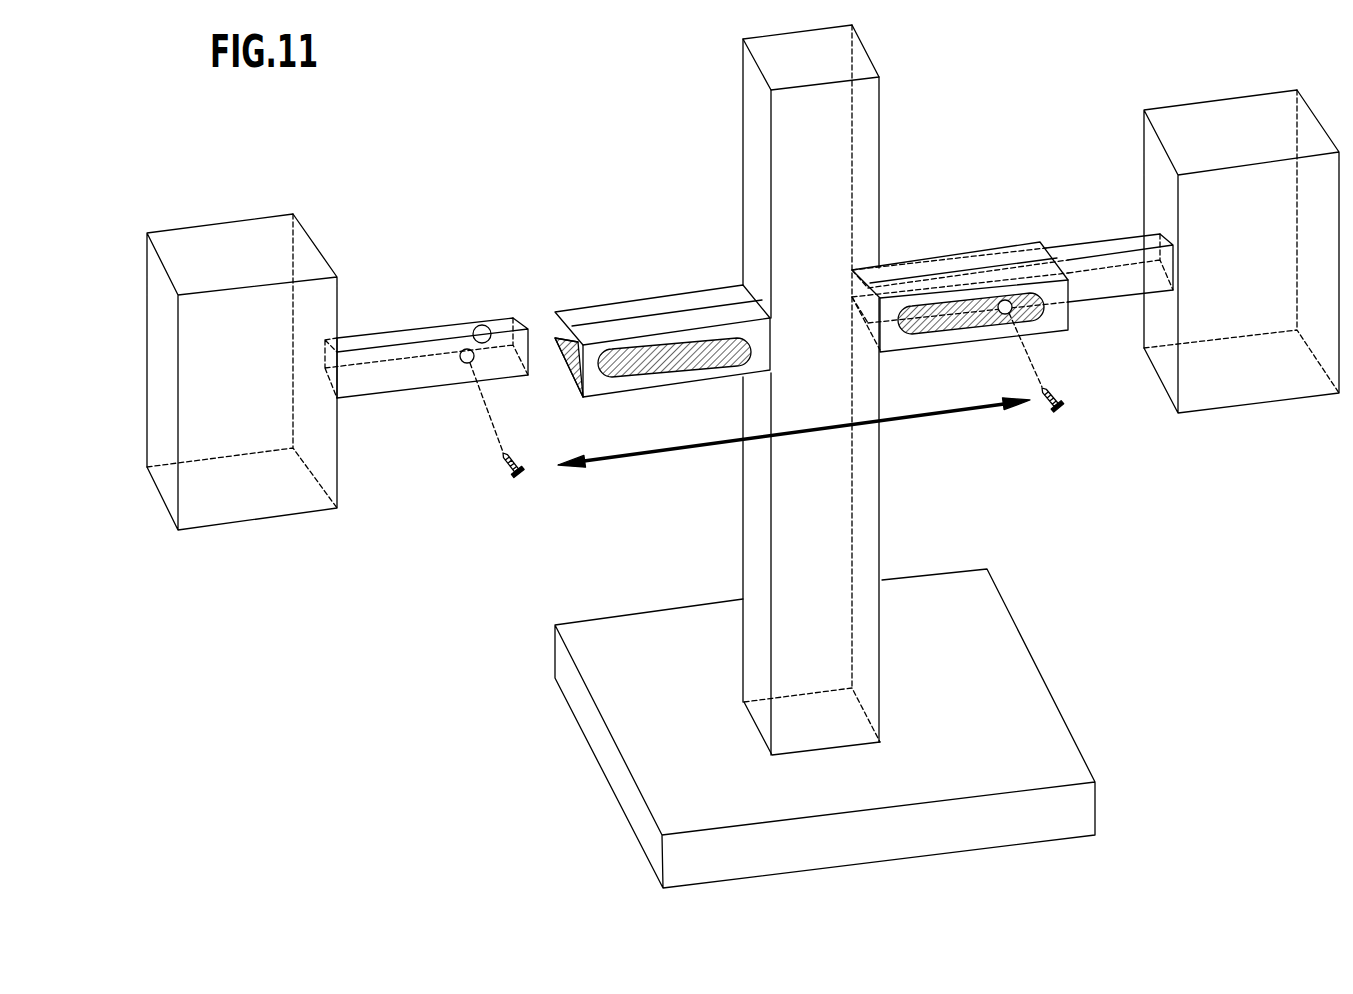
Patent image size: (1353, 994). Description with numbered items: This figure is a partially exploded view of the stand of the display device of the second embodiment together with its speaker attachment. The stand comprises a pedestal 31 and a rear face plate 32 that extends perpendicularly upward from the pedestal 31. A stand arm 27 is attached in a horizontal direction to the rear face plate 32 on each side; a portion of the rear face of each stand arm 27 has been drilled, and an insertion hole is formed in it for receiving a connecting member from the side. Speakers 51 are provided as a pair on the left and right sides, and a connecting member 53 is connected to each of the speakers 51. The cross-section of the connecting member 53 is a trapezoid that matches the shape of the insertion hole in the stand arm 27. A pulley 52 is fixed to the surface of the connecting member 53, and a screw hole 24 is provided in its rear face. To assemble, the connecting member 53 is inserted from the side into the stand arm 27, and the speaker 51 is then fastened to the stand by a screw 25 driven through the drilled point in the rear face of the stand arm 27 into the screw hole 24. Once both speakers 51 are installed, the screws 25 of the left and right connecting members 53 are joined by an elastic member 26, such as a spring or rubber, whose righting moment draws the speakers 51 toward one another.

The screw hole 24 is at (734, 382).
The screw 25 is at (520, 481).
The elastic member 26 is at (677, 450).
The stand arm 27 is at (660, 293).
The pedestal 31 is at (1057, 696).
The rear face plate 32 is at (880, 510).
The speaker 51 is at (245, 518).
The pulley 52 is at (471, 326).
The connecting member 53 is at (413, 328).